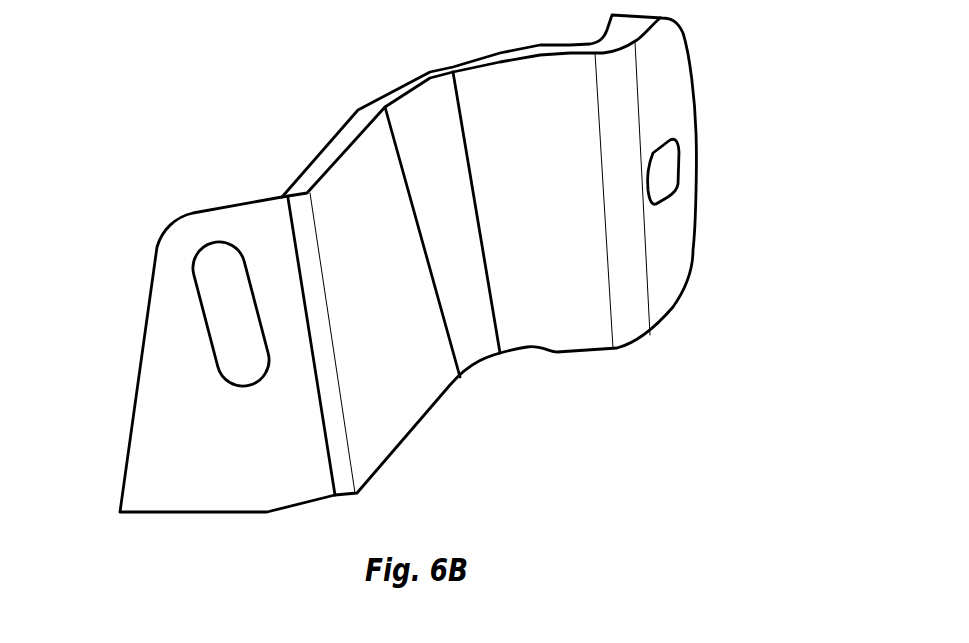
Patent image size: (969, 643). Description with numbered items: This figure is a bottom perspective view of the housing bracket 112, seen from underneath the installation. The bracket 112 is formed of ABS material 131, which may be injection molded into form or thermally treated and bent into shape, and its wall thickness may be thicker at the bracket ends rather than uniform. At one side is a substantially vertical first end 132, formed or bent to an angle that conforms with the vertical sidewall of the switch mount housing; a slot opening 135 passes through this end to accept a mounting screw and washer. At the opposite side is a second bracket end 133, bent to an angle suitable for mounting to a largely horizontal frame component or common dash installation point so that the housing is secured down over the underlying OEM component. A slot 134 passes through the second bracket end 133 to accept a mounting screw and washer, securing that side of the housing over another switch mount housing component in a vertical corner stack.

The housing bracket 112 is at (310, 122).
The ABS material 131 is at (390, 360).
The first end 132 is at (697, 115).
The second bracket end 133 is at (128, 473).
The slot 134 is at (202, 330).
The slot opening 135 is at (680, 180).